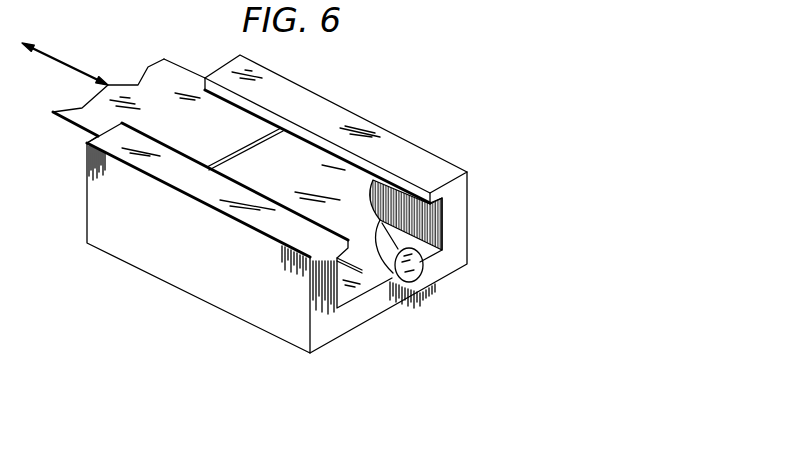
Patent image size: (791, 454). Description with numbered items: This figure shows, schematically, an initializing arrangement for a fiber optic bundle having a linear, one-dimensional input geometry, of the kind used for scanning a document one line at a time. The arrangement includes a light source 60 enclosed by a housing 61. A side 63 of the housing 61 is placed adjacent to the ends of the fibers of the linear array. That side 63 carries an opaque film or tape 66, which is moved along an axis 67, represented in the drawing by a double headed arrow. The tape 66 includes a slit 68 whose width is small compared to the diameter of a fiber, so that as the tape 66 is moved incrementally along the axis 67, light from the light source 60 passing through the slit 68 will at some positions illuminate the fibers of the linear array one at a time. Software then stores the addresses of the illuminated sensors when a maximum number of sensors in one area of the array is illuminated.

The light source 60 is at (414, 270).
The housing 61 is at (331, 325).
The side of housing 63 is at (300, 162).
The opaque film or tape 66 is at (161, 88).
The axis 67 is at (60, 51).
The slit 68 is at (243, 147).